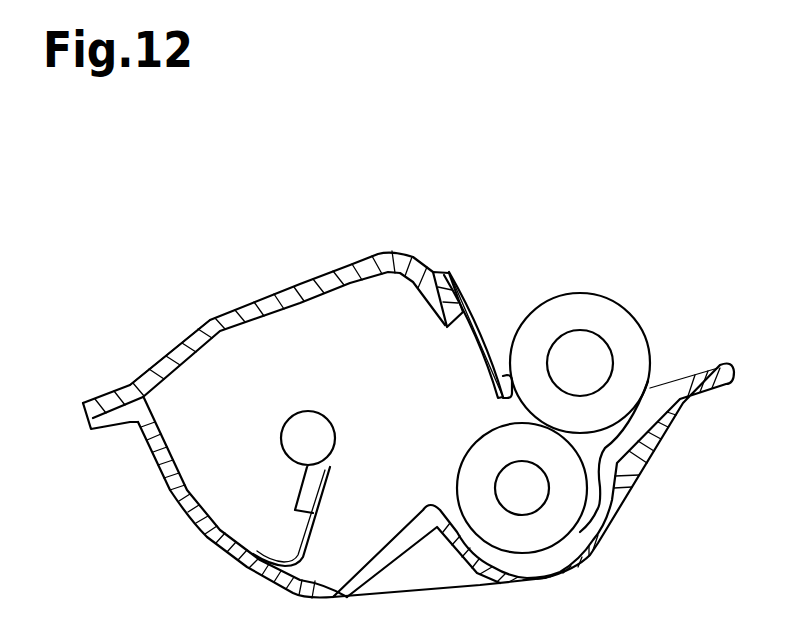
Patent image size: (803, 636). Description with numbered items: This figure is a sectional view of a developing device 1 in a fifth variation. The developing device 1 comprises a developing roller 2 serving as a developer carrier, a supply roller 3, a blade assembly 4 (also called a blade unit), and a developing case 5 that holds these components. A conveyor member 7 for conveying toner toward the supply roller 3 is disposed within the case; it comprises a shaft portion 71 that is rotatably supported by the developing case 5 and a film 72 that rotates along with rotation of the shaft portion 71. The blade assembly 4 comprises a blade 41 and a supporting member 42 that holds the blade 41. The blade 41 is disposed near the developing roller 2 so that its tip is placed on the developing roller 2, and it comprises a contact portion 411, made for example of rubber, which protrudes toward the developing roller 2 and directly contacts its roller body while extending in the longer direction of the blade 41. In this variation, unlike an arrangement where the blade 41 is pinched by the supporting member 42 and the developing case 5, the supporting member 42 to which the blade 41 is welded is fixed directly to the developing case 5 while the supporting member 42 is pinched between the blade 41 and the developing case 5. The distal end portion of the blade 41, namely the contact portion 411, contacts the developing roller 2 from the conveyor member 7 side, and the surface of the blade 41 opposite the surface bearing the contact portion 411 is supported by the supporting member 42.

The developing device 1 is at (160, 300).
The developing roller 2 is at (603, 310).
The supply roller 3 is at (560, 508).
The blade assembly 4 is at (471, 346).
The blade 41 is at (484, 330).
The supporting member 42 is at (453, 277).
The contact portion 411 is at (500, 388).
The developing case 5 is at (160, 357).
The conveyor member 7 is at (229, 452).
The shaft portion 71 is at (327, 428).
The film 72 is at (308, 523).